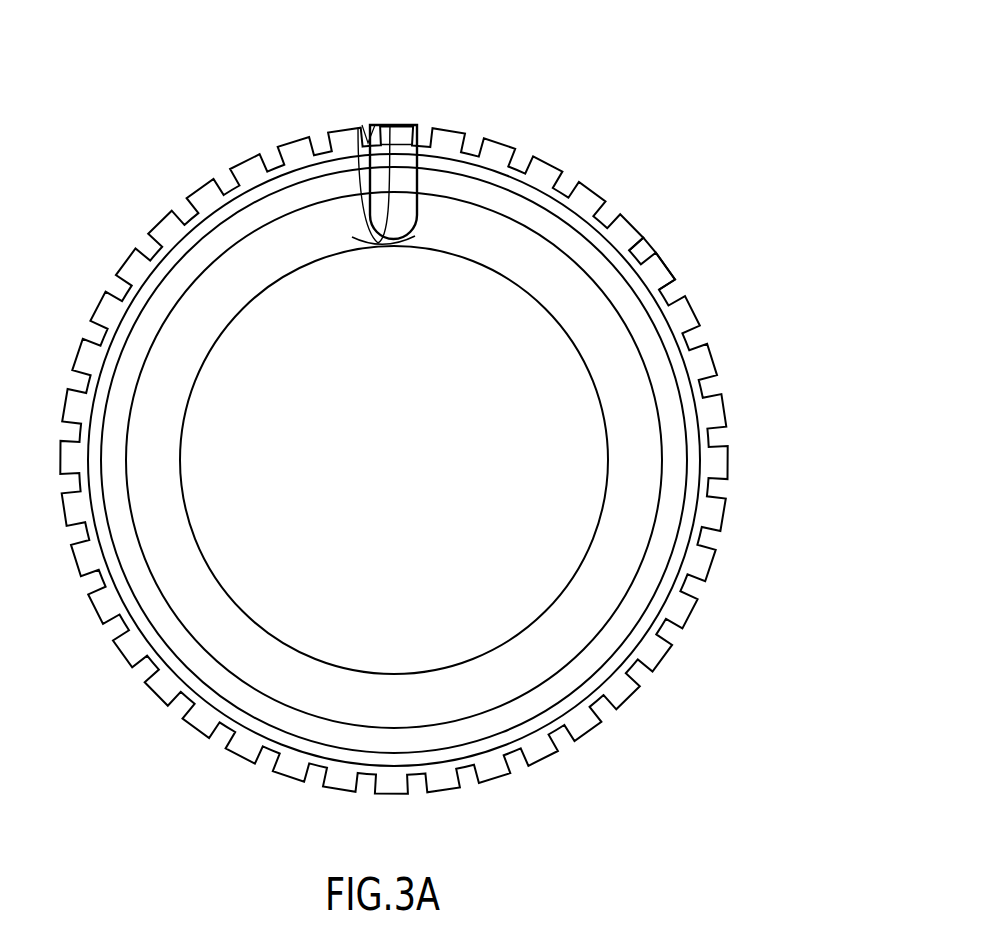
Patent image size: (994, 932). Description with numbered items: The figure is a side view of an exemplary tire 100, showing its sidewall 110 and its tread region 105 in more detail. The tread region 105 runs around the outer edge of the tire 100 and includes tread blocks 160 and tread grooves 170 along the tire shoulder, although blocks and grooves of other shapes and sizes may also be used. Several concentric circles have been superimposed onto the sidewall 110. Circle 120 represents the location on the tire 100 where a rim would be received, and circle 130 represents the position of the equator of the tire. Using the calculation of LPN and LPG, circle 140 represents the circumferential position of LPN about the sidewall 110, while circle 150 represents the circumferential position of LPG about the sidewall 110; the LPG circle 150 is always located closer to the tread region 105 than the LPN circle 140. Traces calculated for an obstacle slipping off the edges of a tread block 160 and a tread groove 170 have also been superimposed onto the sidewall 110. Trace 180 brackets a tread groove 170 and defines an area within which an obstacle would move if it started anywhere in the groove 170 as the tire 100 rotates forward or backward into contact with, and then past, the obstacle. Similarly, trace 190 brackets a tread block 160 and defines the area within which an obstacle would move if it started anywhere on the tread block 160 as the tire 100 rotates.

The tire 100 is at (596, 116).
The tread region 105 is at (172, 192).
The sidewall 110 is at (183, 360).
The circle 120 is at (605, 452).
The circle 130 is at (627, 335).
The circle 140 is at (668, 372).
The circle 150 is at (676, 322).
The tread block 160 is at (661, 268).
The tread groove 170 is at (651, 245).
The trace 180 is at (358, 215).
The trace 190 is at (367, 182).